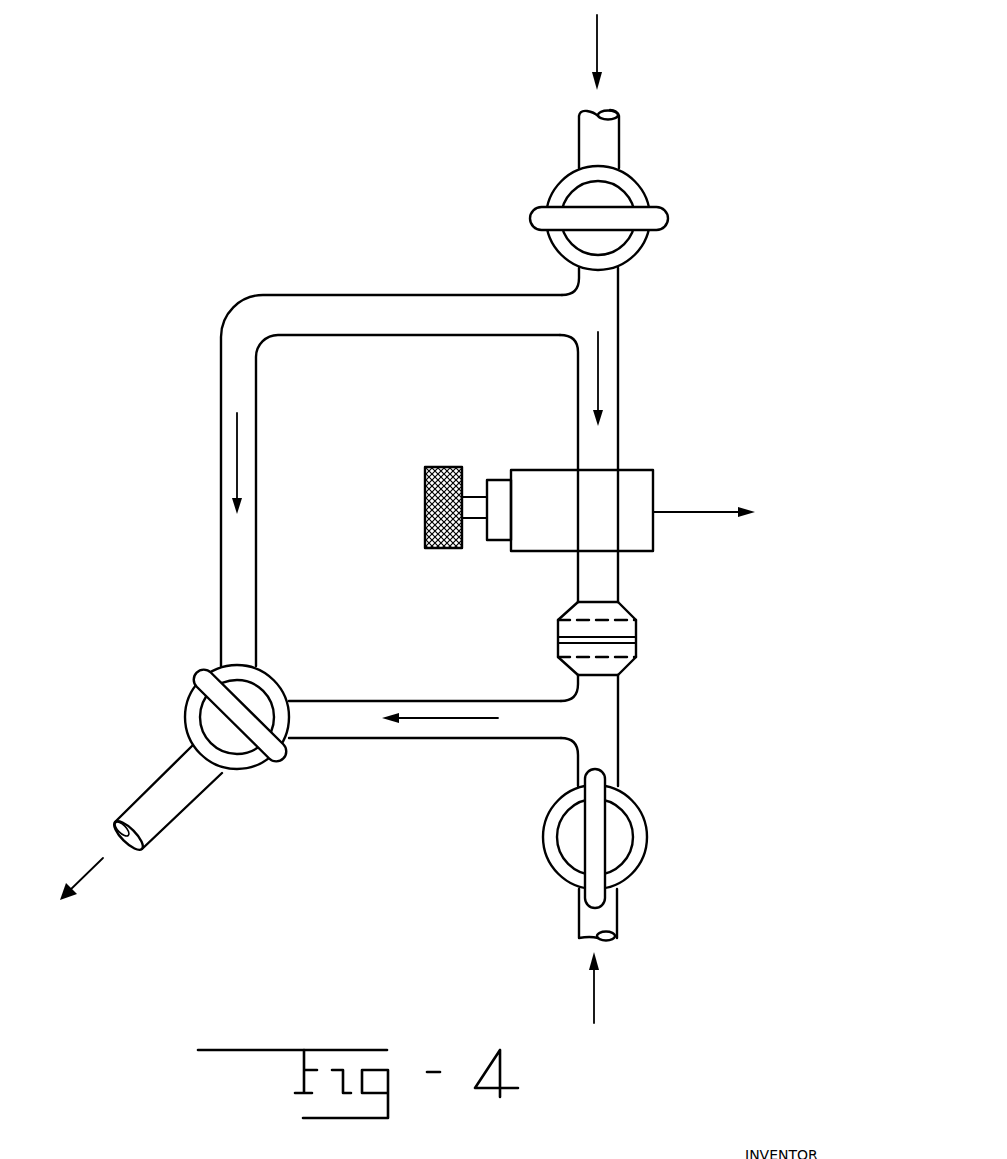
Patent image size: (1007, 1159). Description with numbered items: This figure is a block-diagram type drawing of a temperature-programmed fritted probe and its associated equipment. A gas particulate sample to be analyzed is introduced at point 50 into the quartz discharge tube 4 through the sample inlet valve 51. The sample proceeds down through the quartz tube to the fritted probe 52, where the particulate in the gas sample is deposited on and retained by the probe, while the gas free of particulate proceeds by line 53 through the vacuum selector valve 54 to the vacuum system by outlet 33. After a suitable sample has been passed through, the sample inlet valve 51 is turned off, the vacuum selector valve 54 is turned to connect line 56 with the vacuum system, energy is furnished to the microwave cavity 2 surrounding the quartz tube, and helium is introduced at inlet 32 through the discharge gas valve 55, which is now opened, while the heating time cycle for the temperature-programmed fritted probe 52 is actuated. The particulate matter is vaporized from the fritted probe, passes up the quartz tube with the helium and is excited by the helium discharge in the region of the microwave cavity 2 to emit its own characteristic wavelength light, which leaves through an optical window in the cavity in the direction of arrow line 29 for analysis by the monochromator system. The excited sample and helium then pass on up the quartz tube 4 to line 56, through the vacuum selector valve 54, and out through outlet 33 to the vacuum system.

The microwave cavity 2 is at (536, 470).
The quartz discharge tube 4 is at (618, 402).
The arrow line 29 is at (685, 509).
The inlet 32 is at (596, 988).
The outlet 33 is at (83, 878).
The point 50 is at (599, 66).
The sample inlet valve 51 is at (640, 186).
The fritted probe 52 is at (636, 629).
The line 53 is at (393, 701).
The vacuum selector valve 54 is at (240, 771).
The discharge gas valve 55 is at (648, 831).
The line 56 is at (328, 295).